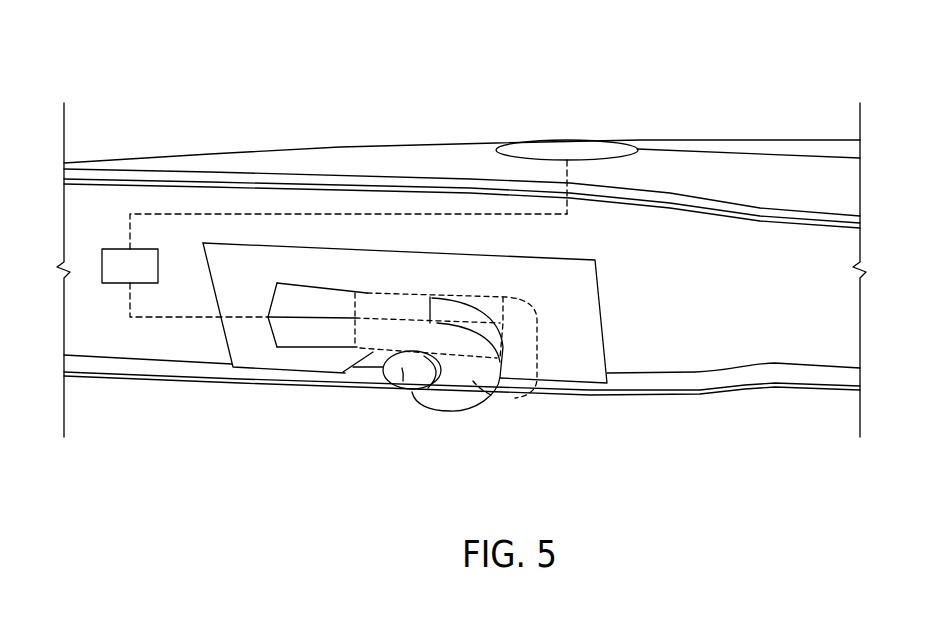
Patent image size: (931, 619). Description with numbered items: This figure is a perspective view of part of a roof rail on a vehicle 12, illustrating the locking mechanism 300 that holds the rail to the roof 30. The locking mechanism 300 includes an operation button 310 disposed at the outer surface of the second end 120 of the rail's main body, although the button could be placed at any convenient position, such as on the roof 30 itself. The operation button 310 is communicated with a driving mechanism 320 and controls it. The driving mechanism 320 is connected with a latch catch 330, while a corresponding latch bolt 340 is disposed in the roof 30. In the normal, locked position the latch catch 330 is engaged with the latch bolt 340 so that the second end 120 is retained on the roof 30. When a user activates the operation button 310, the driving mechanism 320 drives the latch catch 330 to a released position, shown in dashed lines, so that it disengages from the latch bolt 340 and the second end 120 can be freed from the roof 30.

The aircraft 12 is at (524, 87).
The second end 120 is at (331, 147).
The roof 30 is at (677, 396).
The locking mechanism 300 is at (570, 241).
The operation button 310 is at (584, 147).
The driving mechanism 320 is at (334, 265).
The latch catch 330 is at (437, 404).
The latch bolt 340 is at (400, 383).